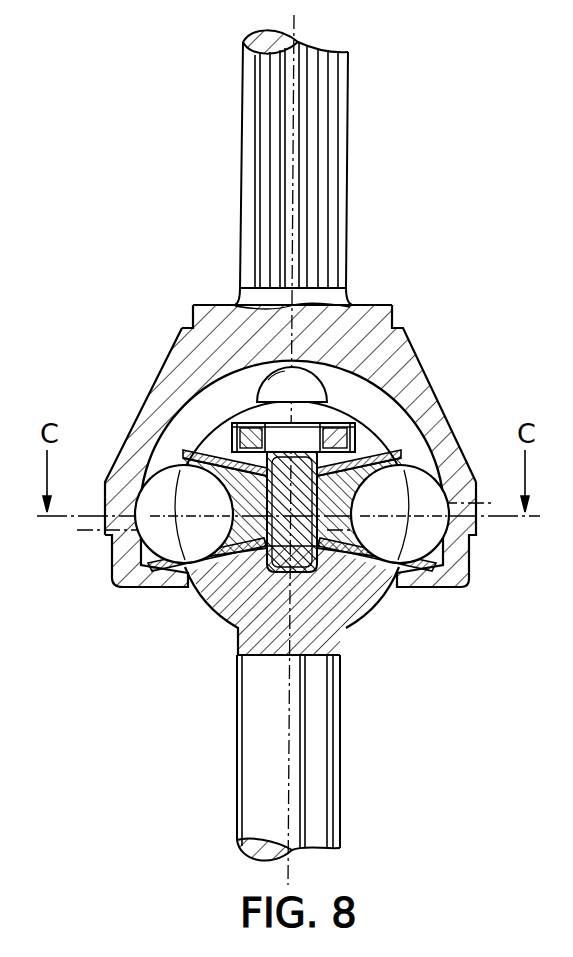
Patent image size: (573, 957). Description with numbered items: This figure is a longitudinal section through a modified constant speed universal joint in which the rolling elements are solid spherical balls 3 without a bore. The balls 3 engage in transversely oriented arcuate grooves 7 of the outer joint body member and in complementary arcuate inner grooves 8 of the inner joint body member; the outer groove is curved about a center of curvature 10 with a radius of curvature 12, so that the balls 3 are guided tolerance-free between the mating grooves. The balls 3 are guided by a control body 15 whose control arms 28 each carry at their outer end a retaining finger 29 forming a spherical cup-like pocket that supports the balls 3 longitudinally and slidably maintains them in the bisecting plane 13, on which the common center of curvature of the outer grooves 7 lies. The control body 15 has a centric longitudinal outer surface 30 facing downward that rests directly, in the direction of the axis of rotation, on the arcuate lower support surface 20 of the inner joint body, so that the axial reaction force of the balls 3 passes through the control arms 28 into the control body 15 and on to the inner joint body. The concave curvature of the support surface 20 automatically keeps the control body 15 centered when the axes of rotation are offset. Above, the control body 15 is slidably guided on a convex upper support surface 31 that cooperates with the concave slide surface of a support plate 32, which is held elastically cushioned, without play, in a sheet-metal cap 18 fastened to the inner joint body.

The ball 3 is at (417, 493).
The arcuate groove 7 is at (367, 443).
The arcuate inner groove 8 is at (465, 587).
The center of curvature 10 is at (205, 607).
The radius of curvature 12 is at (148, 588).
The bisecting plane 13 is at (483, 520).
The control body 15 is at (175, 378).
The sheet-metal cap 18 is at (378, 392).
The lower support surface 20 is at (357, 623).
The control arm 28 is at (190, 455).
The retaining finger 29 is at (385, 587).
The centric longitudinal outer surface 30 is at (235, 597).
The upper support surface 31 is at (187, 332).
The support plate 32 is at (405, 330).